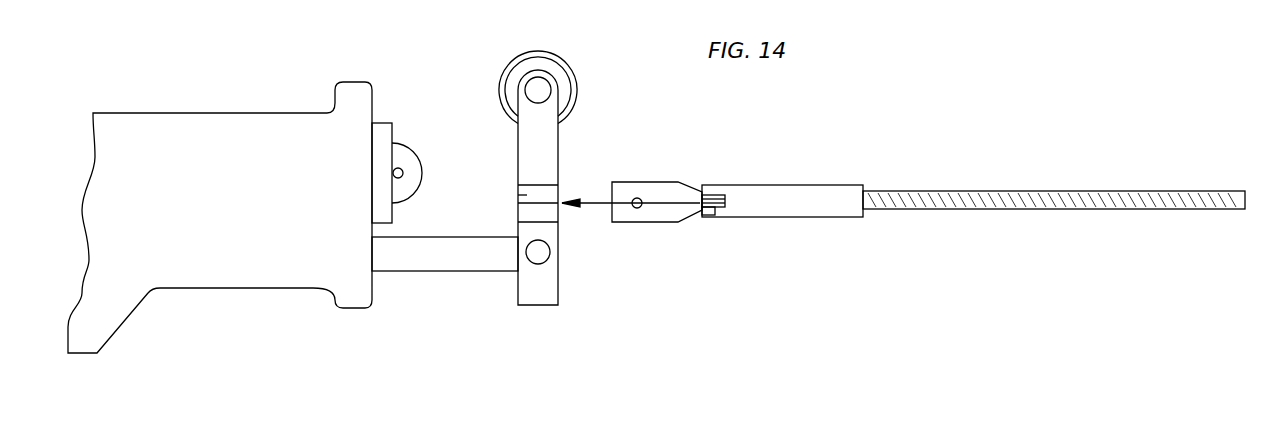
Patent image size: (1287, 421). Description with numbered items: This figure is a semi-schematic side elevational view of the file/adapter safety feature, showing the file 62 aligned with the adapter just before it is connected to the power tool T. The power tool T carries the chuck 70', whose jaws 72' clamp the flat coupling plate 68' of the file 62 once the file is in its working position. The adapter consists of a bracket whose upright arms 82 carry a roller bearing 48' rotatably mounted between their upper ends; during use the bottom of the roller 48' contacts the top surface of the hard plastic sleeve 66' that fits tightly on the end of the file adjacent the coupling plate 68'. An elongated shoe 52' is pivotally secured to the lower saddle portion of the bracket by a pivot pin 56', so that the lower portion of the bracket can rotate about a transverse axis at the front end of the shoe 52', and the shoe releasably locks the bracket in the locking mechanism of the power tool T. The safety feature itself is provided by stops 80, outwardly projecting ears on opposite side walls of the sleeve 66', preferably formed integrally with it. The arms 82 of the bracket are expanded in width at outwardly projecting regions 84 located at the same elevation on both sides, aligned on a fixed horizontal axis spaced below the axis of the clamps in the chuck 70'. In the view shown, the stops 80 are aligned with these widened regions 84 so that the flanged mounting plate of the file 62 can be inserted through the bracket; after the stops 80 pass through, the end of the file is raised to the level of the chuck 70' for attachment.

The power tool T is at (207, 127).
The chuck 70' is at (430, 121).
The jaws 72' is at (443, 179).
The shoe 52' is at (445, 281).
The roller bearing 48' is at (568, 73).
The arms 82 is at (548, 153).
The outwardly projecting regions 84 is at (527, 195).
The pivot pin 56' is at (591, 265).
The coupling plate 68' is at (650, 182).
The stops 80 is at (717, 208).
The sleeve 66' is at (801, 177).
The file 62 is at (1017, 191).